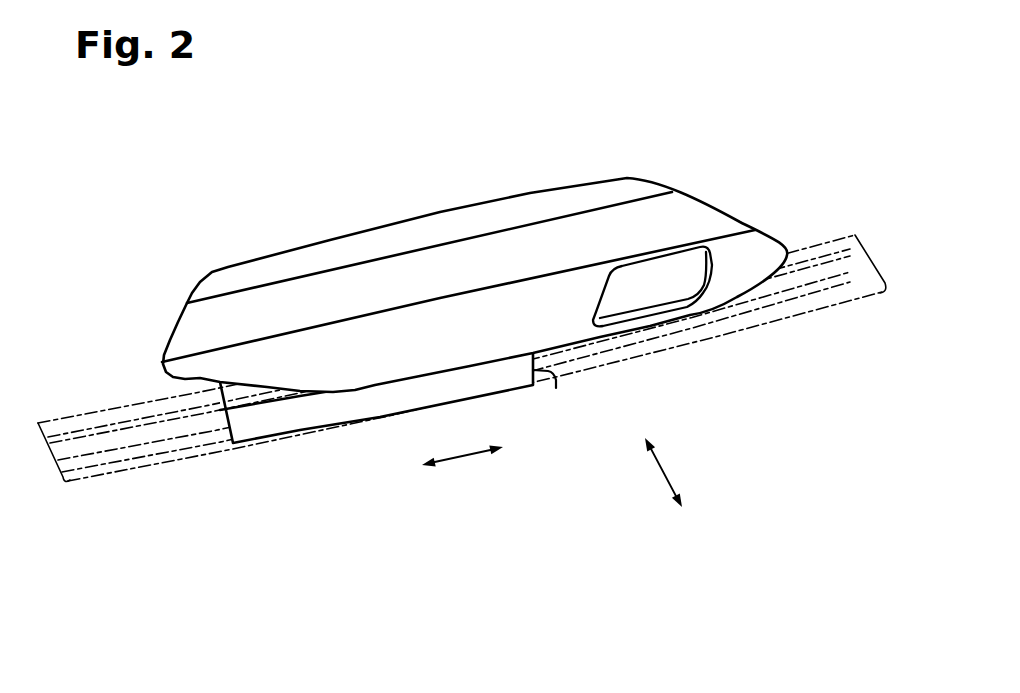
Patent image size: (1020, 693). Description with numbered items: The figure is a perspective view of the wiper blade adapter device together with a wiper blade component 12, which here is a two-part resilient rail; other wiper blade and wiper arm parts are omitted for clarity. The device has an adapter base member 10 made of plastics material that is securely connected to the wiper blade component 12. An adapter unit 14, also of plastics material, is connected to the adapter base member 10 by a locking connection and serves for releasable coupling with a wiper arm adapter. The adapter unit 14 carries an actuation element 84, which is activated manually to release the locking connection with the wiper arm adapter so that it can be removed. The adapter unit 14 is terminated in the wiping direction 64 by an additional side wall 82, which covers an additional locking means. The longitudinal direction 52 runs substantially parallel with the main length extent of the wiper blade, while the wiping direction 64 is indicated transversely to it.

The adapter base member 10 is at (340, 413).
The wiper blade component 12 is at (143, 447).
The adapter unit 14 is at (240, 230).
The longitudinal direction 52 is at (462, 455).
The wiping direction 64 is at (659, 474).
The additional side wall 82 is at (556, 388).
The actuation element 84 is at (638, 292).